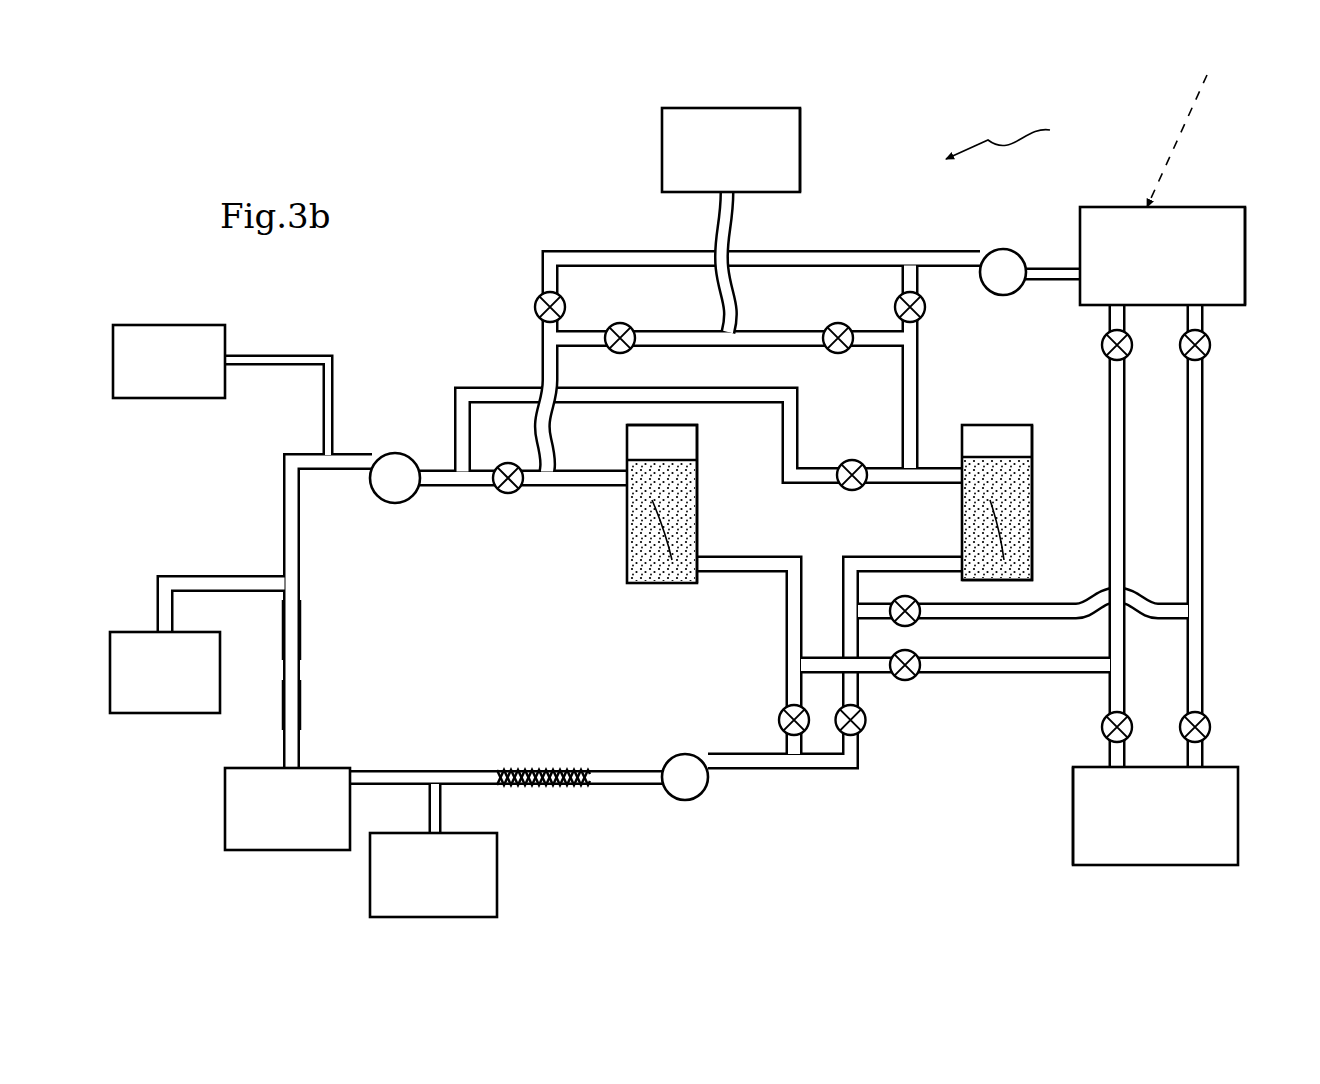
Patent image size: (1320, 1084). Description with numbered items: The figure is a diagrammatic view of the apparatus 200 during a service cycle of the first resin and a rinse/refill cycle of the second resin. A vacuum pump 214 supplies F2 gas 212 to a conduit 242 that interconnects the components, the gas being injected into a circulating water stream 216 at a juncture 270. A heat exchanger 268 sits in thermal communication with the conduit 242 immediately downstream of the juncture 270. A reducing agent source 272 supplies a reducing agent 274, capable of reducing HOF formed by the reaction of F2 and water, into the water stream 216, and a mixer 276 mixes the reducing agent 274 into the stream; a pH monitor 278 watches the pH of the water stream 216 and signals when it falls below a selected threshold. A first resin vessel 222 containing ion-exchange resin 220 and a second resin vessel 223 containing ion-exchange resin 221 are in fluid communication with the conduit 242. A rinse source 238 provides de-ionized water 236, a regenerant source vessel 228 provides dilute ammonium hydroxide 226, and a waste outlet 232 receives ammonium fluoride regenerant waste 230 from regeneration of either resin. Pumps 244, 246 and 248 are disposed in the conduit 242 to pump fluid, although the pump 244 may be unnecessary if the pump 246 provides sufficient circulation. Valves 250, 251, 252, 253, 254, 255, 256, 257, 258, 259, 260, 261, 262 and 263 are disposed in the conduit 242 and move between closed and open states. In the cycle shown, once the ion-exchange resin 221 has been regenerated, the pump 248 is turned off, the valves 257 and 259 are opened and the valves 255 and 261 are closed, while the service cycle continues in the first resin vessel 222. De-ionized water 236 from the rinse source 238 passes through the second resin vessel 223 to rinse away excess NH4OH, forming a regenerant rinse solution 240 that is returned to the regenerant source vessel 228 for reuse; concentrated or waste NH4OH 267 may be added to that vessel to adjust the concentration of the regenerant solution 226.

The apparatus 200 is at (1021, 140).
The F2 gas 212 is at (240, 575).
The vacuum pump 214 is at (176, 717).
The water stream 216 is at (302, 622).
The ion-exchange resin 220 is at (641, 586).
The ion-exchange resin 221 is at (1034, 556).
The first resin vessel 222 is at (699, 513).
The second resin vessel 223 is at (1034, 470).
The dilute ammonium hydroxide 226 is at (1216, 211).
The regenerant source vessel 228 is at (1247, 229).
The ammonium fluoride regenerant waste 230 is at (1100, 843).
The waste outlet 232 is at (1073, 797).
The de-ionized water 236 is at (690, 158).
The rinse source 238 is at (801, 120).
The regenerant rinse solution 240 is at (1204, 453).
The conduit 242 is at (806, 243).
The pump 244 is at (700, 797).
The pump 246 is at (402, 452).
The pump 248 is at (1003, 296).
The valve 250 is at (780, 712).
The valve 251 is at (863, 729).
The valve 252 is at (908, 681).
The valve 253 is at (918, 624).
The valve 254 is at (1104, 718).
The valve 255 is at (1207, 718).
The valve 256 is at (1105, 353).
The valve 257 is at (1210, 352).
The valve 258 is at (628, 351).
The valve 259 is at (829, 350).
The valve 260 is at (563, 300).
The valve 261 is at (897, 300).
The valve 262 is at (504, 496).
The valve 263 is at (848, 459).
The concentrated NH4OH 267 is at (1186, 141).
The heat exchanger 268 is at (276, 851).
The juncture 270 is at (302, 578).
The reducing agent source 272 is at (500, 888).
The reducing agent 274 is at (444, 812).
The mixer 276 is at (536, 766).
The pH monitor 278 is at (170, 404).